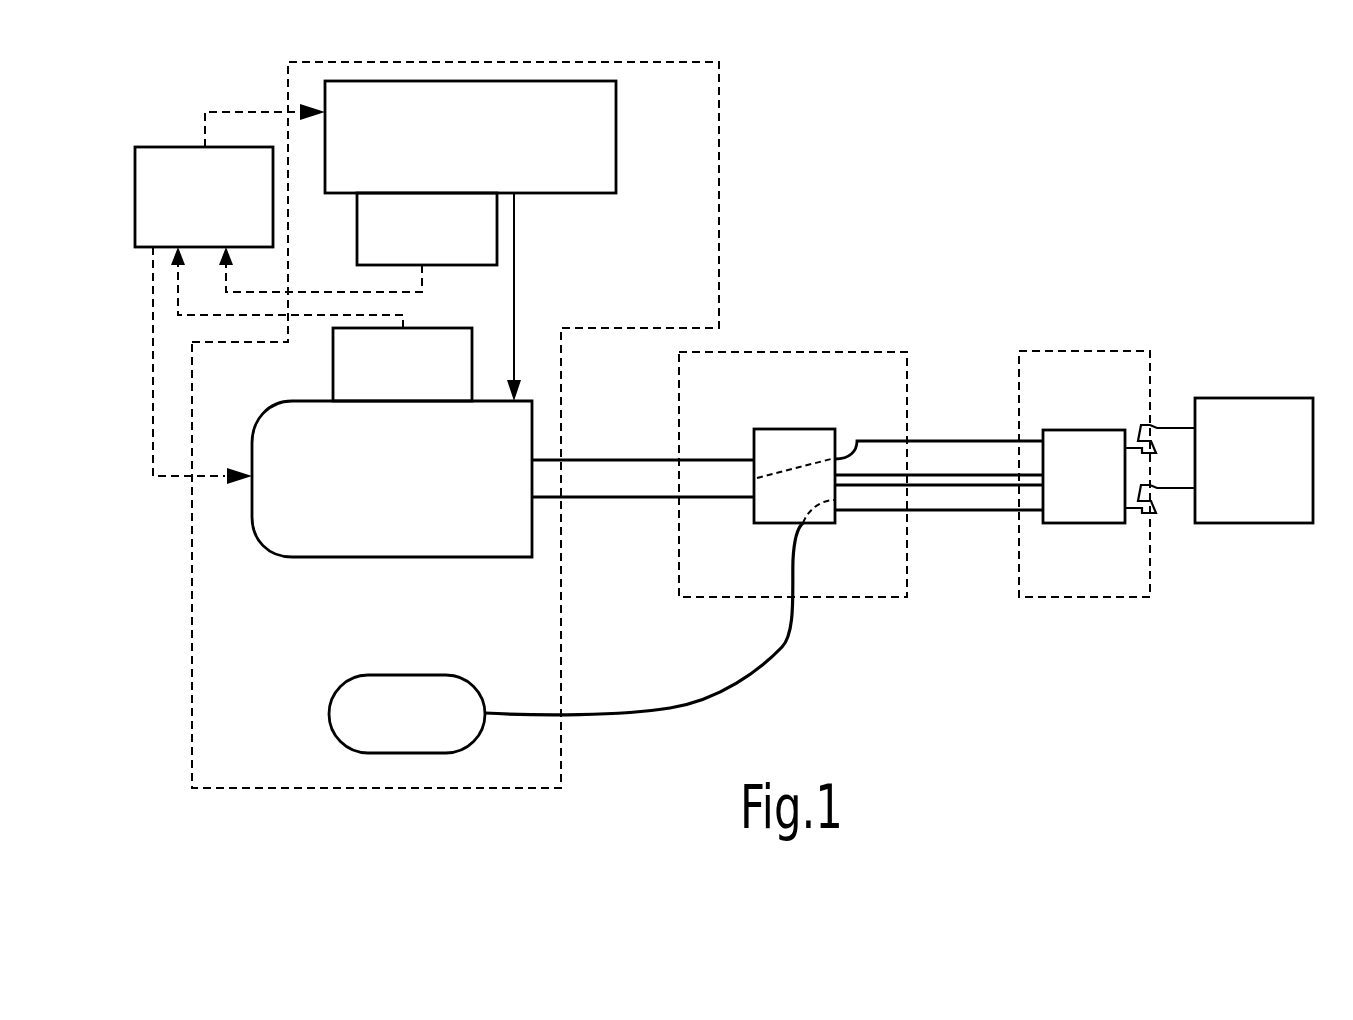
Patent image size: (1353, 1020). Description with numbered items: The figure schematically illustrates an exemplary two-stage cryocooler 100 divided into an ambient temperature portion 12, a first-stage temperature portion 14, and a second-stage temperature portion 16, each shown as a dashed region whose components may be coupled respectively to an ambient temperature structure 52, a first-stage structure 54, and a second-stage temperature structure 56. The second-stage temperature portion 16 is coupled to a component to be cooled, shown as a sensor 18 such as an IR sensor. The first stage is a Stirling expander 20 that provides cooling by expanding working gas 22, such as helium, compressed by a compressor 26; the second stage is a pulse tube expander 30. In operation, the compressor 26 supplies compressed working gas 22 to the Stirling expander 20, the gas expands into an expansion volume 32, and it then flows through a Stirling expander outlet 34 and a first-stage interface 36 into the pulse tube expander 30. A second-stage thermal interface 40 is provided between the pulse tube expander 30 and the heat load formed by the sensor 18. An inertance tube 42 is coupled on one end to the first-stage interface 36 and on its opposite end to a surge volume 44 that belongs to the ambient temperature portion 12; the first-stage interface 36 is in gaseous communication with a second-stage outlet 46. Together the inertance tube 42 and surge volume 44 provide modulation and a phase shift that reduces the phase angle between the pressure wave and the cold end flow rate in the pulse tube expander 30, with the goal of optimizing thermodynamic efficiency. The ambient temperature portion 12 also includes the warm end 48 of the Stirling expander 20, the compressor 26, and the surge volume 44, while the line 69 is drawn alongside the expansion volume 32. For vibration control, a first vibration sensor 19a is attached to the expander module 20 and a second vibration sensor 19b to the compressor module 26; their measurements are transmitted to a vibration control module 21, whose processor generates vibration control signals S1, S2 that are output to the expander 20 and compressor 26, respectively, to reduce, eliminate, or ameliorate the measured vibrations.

The two-stage cryocooler 100 is at (1078, 108).
The ambient temperature portion 12 is at (504, 425).
The ambient temperature structure 52 is at (719, 146).
The first-stage temperature portion 14 is at (793, 446).
The first-stage structure 54 is at (800, 352).
The second-stage temperature portion 16 is at (1084, 446).
The second-stage temperature structure 56 is at (1075, 351).
The sensor 18 is at (1230, 505).
The first vibration sensor 19a is at (333, 370).
The second vibration sensor 19b is at (357, 232).
The Stirling expander 20 is at (300, 578).
The vibration control module 21 is at (143, 250).
The working gas 22 is at (604, 297).
The compressor 26 is at (617, 122).
The pulse tube expander 30 is at (963, 542).
The expansion volume 32 is at (636, 459).
The Stirling expander outlet 34 is at (754, 466).
The first-stage interface 36 is at (780, 513).
The second-stage thermal interface 40 is at (1070, 505).
The inertance tube 42 is at (677, 707).
The surge volume 44 is at (390, 675).
The second-stage outlet 46 is at (835, 500).
The warm end 48 is at (545, 525).
The lower gas line 69 is at (612, 500).
The vibration control signal S1 is at (153, 478).
The vibration control signal S2 is at (203, 130).